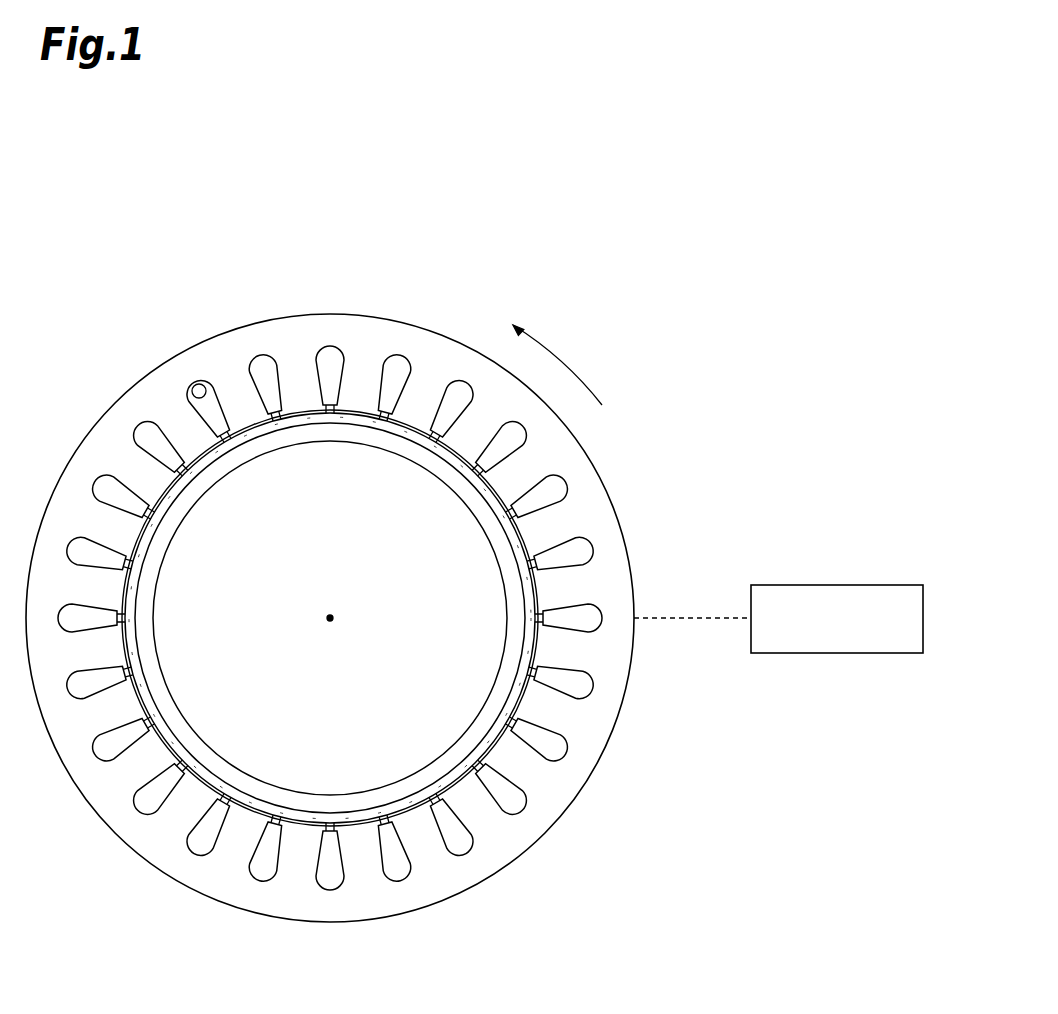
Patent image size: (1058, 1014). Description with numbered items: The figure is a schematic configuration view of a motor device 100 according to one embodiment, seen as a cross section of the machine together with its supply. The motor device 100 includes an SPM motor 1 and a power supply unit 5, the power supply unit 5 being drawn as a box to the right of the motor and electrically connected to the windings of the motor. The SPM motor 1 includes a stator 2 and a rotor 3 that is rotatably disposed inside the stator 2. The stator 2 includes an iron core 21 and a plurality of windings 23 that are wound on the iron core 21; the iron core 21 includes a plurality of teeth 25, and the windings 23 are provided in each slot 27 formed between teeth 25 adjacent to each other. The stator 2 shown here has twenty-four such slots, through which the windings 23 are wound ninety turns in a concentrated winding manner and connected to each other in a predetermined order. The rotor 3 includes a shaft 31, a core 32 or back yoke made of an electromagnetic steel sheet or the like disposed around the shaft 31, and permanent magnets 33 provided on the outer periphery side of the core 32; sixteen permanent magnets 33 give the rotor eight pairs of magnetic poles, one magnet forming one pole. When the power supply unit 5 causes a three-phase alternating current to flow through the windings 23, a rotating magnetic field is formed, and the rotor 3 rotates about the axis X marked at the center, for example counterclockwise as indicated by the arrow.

The motor device 100 is at (745, 220).
The SPM motor 1 is at (268, 243).
The stator 2 is at (194, 340).
The iron core 21 is at (310, 335).
The windings 23 is at (400, 356).
The teeth 25 is at (235, 405).
The slot 27 is at (200, 383).
The rotor 3 is at (531, 538).
The shaft 31 is at (363, 770).
The core 32 is at (415, 787).
The permanent magnets 33 is at (530, 655).
The power supply unit 5 is at (833, 585).
The axis X is at (333, 621).